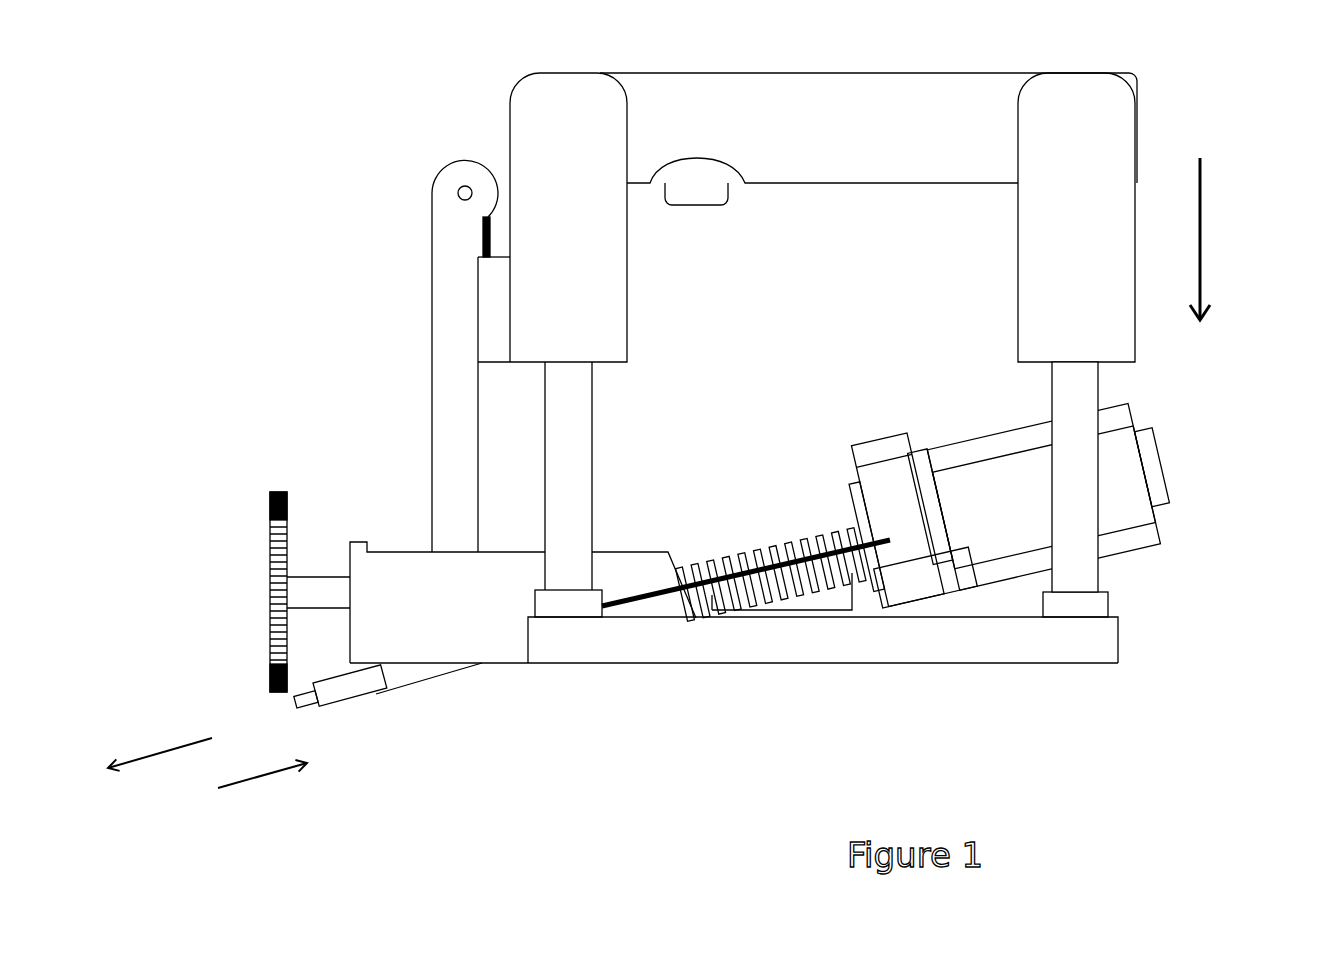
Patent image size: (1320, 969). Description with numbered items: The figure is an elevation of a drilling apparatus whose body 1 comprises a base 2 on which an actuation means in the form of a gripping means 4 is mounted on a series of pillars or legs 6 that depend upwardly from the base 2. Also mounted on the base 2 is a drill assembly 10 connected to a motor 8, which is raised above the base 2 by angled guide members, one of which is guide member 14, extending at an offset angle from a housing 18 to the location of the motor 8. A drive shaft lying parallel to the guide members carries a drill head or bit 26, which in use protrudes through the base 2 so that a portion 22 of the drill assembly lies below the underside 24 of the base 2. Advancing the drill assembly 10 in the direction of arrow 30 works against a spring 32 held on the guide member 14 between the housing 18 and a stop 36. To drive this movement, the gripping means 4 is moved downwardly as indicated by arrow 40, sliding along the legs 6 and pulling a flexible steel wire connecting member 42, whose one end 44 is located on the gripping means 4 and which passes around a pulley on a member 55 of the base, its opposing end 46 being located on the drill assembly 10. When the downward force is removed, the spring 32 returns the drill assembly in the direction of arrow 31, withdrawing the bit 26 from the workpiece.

The body 1 is at (1100, 378).
The base 2 is at (730, 650).
The gripping means 4 is at (1112, 165).
The pillars or legs 6 is at (558, 407).
The motor 8 is at (1133, 537).
The drill assembly 10 is at (780, 587).
The guide member 14 is at (797, 537).
The housing 18 is at (603, 575).
The portion of the drill assembly 22 is at (383, 668).
The underside of the base 24 is at (640, 667).
The drill head or bit 26 is at (293, 697).
The arrow 30 is at (167, 753).
The arrow 31 is at (272, 772).
The spring 32 is at (763, 573).
The stop 36 is at (927, 587).
The arrow 40 is at (1203, 240).
The connecting member 42 is at (625, 600).
The end of the connecting member 44 is at (495, 268).
The opposing end of the connecting member 46 is at (892, 537).
The member of the base 55 is at (432, 430).